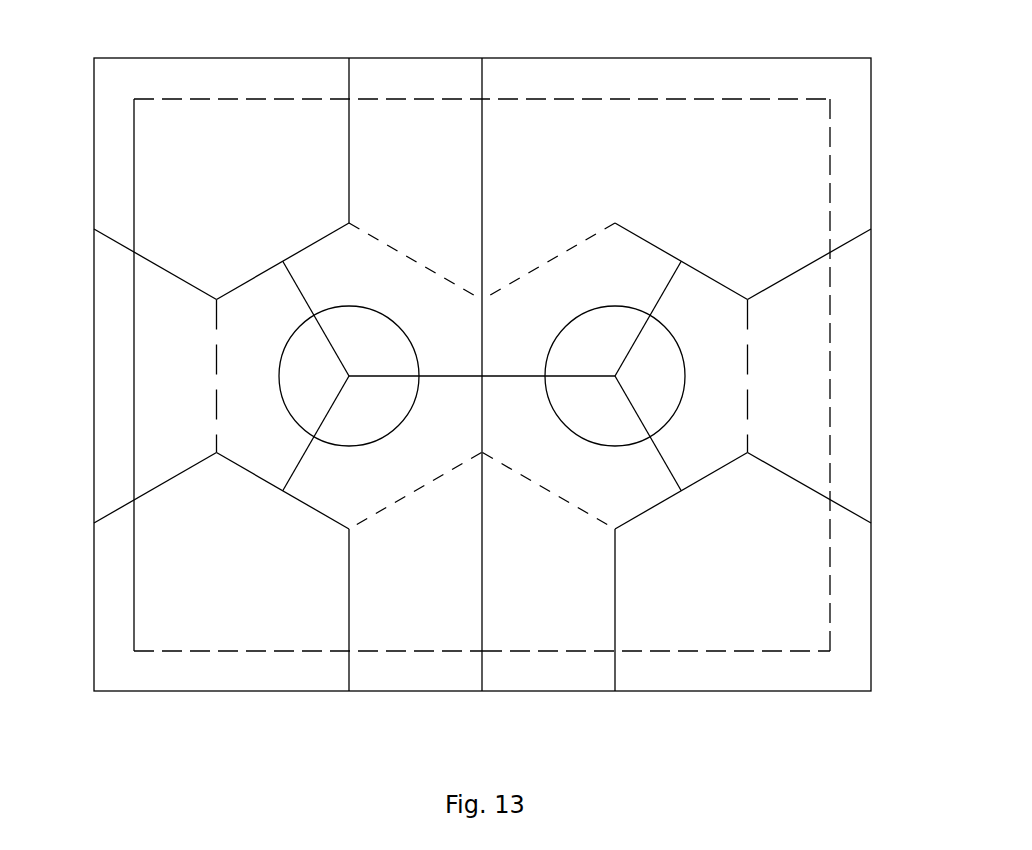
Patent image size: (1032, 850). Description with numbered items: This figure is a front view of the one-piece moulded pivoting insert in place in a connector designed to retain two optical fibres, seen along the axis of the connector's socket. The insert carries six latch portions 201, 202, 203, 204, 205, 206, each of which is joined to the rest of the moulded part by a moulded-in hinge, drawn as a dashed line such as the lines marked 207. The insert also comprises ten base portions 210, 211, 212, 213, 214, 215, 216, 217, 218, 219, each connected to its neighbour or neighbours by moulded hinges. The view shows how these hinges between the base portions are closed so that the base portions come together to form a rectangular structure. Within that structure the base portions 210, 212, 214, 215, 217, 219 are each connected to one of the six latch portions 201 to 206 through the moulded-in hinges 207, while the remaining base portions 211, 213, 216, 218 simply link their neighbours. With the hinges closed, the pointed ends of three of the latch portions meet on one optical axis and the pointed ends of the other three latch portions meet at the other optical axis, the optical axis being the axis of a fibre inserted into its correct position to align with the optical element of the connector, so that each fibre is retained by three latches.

The latch portion 201 is at (358, 318).
The latch portion 202 is at (318, 376).
The latch portion 203 is at (371, 433).
The latch portion 204 is at (629, 434).
The latch portion 205 is at (646, 376).
The latch portion 206 is at (515, 318).
The moulded-in hinge 207 is at (548, 260).
The base portion 210 is at (438, 72).
The base portion 211 is at (232, 148).
The base portion 212 is at (158, 378).
The base portion 213 is at (207, 672).
The base portion 214 is at (438, 673).
The base portion 215 is at (537, 680).
The base portion 216 is at (702, 672).
The base portion 217 is at (828, 385).
The base portion 218 is at (843, 163).
The base portion 219 is at (557, 78).